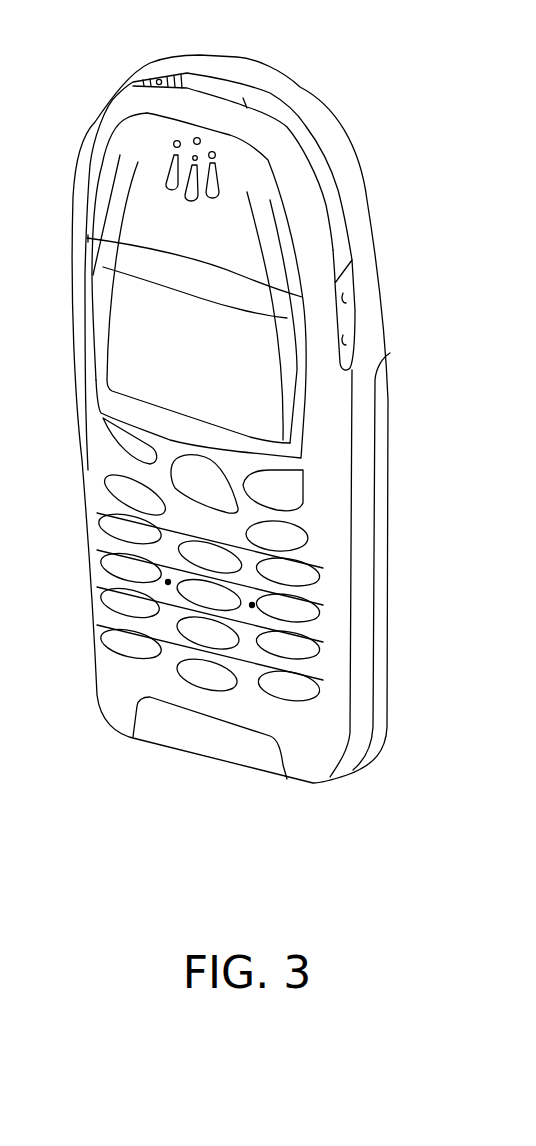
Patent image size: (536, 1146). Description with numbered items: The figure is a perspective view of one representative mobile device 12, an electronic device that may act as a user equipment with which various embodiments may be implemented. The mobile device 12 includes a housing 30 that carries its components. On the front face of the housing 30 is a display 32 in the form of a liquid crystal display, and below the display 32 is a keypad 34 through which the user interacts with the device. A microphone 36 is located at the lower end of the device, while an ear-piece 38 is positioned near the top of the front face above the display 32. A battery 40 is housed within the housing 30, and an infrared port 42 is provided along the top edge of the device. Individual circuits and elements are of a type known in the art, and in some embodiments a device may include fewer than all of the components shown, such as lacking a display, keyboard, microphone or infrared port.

The mobile device 12 is at (336, 62).
The housing 30 is at (358, 204).
The display 32 is at (268, 393).
The keypad 34 is at (290, 693).
The microphone 36 is at (157, 727).
The ear-piece 38 is at (183, 164).
The battery 40 is at (380, 675).
The infrared port 42 is at (217, 83).